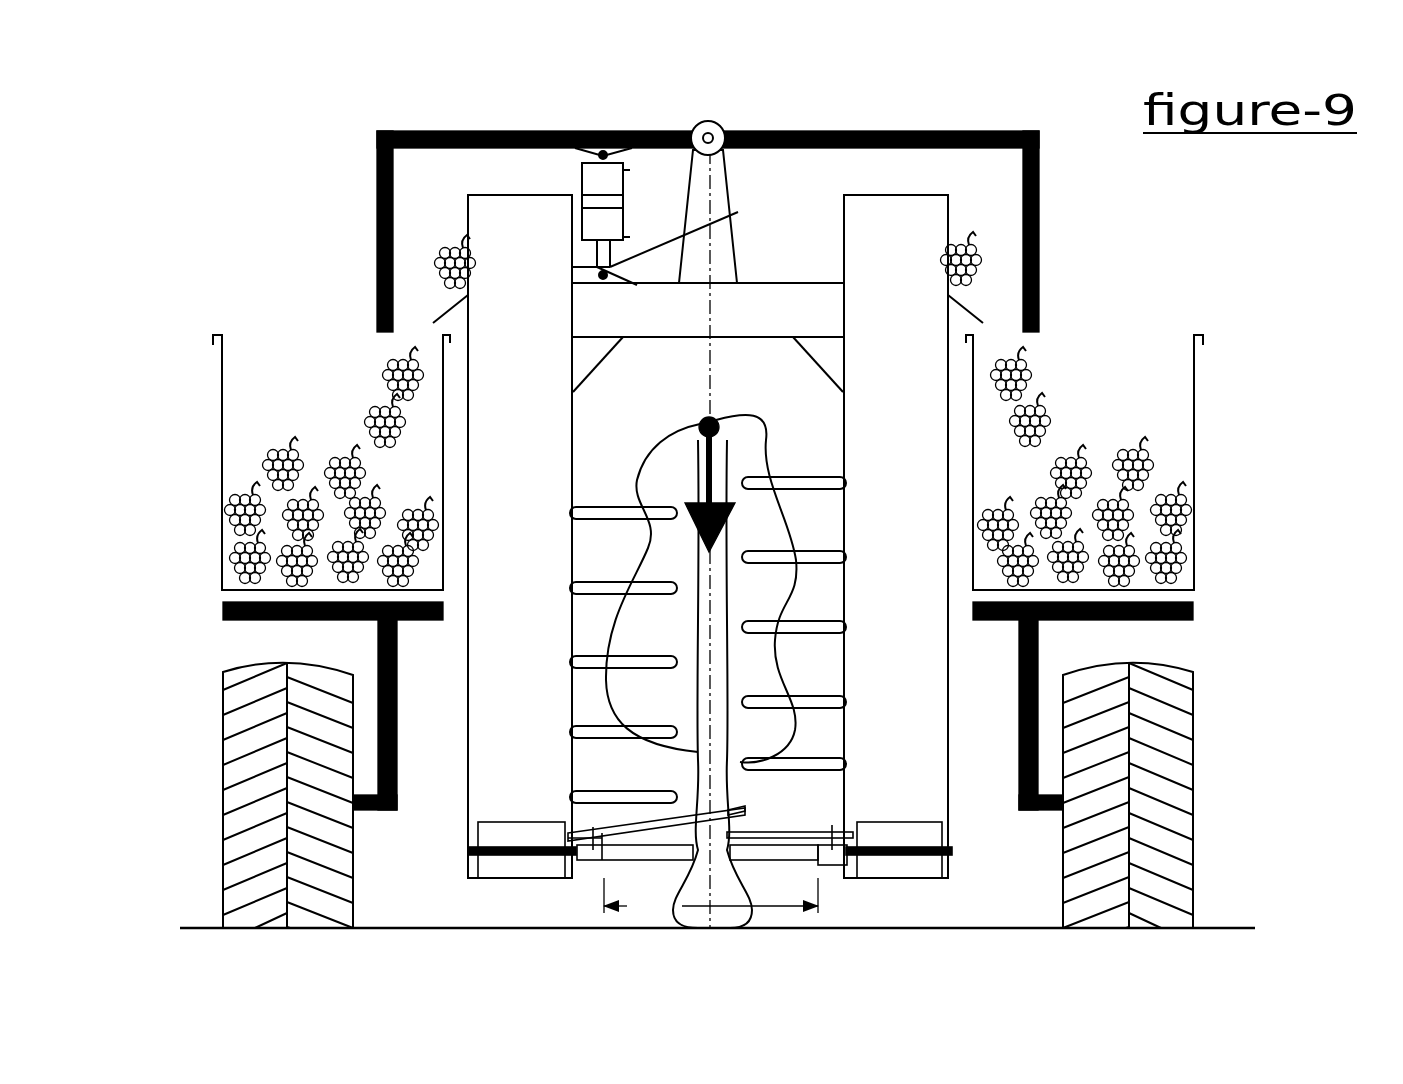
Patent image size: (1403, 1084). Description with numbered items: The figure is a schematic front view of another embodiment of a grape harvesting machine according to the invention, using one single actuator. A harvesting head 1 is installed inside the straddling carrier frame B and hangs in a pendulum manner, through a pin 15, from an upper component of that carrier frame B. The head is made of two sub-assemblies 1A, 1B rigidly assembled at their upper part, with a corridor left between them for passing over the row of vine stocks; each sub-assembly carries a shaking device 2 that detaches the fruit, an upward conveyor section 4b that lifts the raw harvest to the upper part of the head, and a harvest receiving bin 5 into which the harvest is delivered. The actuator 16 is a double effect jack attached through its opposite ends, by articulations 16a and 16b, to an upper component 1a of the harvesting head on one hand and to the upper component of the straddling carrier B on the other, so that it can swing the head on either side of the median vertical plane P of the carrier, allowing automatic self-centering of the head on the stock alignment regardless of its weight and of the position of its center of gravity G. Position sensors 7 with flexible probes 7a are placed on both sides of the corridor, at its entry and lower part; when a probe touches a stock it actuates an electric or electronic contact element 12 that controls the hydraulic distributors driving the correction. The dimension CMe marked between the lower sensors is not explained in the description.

The harvesting head 1 is at (788, 263).
The upper component of the harvesting head 1a is at (793, 315).
The sub-assembly 1A is at (985, 293).
The sub-assembly 1B is at (437, 295).
The shaking device 2 is at (603, 513).
The upward section of the conveyor 4b is at (518, 247).
The harvest receiving bin 5 is at (213, 332).
The position sensor 7 is at (660, 828).
The flexible probe 7a is at (713, 878).
The electric or electronic contact element 12 is at (560, 847).
The pin 15 is at (757, 118).
The actuator 16 is at (605, 182).
The articulation 16a is at (738, 212).
The articulation 16b is at (644, 119).
The straddling carrier frame B is at (375, 245).
The center of gravity G is at (706, 468).
The median vertical plane P is at (712, 575).
The track width dimension CMe is at (711, 895).